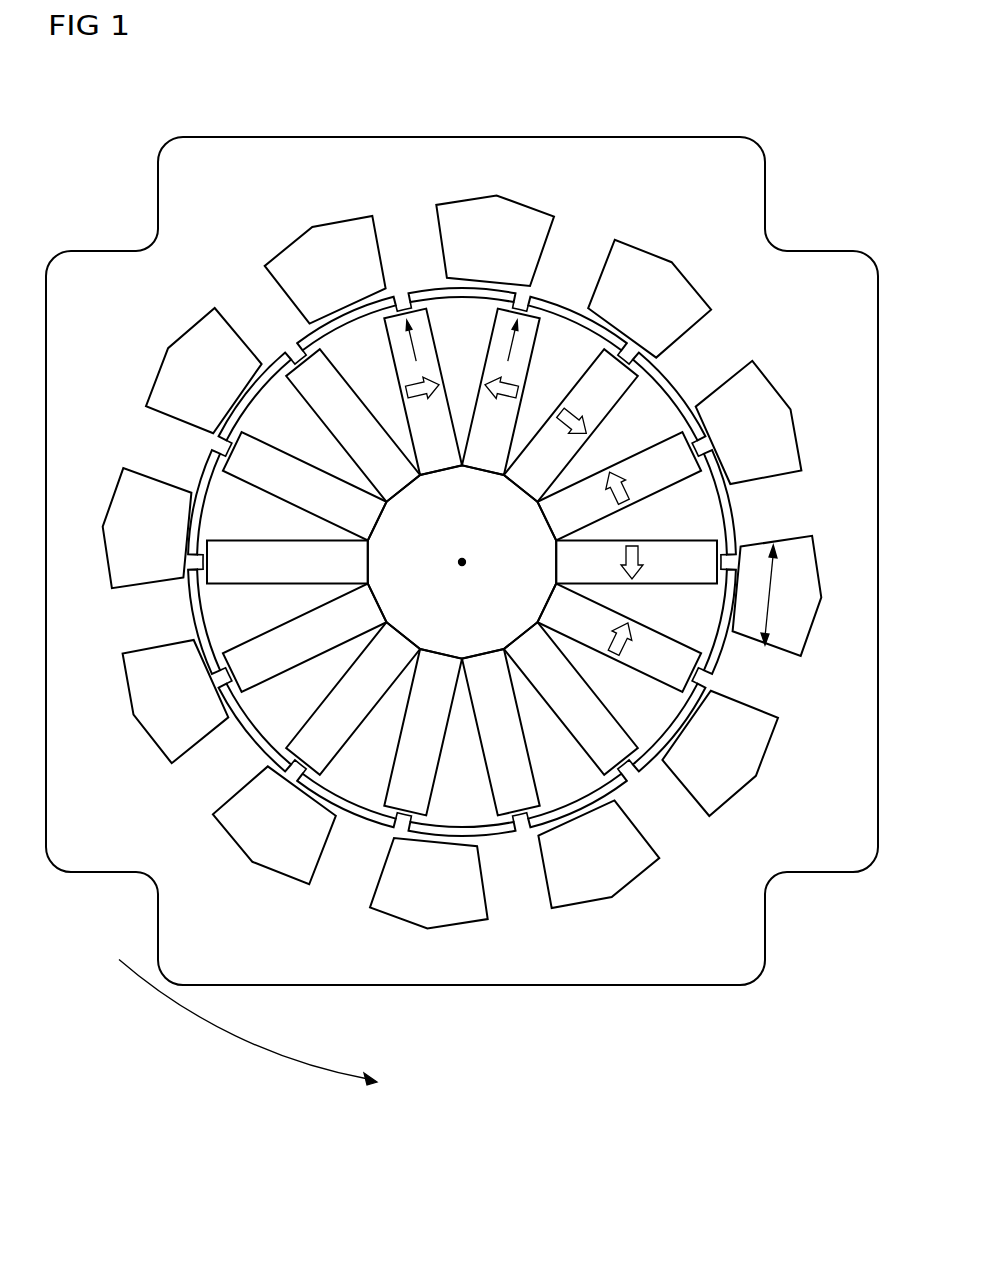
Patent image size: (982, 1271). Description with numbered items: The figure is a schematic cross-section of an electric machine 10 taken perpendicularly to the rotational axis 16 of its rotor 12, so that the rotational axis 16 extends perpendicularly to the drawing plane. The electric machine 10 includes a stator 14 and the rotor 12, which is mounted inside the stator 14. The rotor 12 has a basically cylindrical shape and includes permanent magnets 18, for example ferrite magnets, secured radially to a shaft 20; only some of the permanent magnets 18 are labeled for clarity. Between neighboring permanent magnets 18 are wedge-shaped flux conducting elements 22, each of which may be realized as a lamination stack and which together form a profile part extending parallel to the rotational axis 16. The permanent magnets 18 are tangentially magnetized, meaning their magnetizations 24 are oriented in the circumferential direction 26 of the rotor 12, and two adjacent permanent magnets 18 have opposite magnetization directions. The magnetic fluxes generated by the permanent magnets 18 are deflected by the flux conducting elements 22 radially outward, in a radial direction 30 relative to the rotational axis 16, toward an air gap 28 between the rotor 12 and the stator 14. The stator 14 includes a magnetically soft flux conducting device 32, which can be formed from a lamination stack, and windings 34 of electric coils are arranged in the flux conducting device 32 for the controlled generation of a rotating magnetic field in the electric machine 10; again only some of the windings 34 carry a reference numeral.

The electric machine 10 is at (492, 95).
The rotor 12 is at (561, 791).
The stator 14 is at (486, 988).
The rotational axis 16 is at (460, 563).
The permanent magnets 18 is at (485, 453).
The shaft 20 is at (540, 560).
The flux conducting elements 22 is at (567, 333).
The magnetizations 24 is at (420, 397).
The circumferential direction 26 is at (176, 1010).
The air gap 28 is at (518, 825).
The radial direction 30 is at (505, 343).
The flux conducting device 32 is at (773, 582).
The windings 34 is at (690, 292).